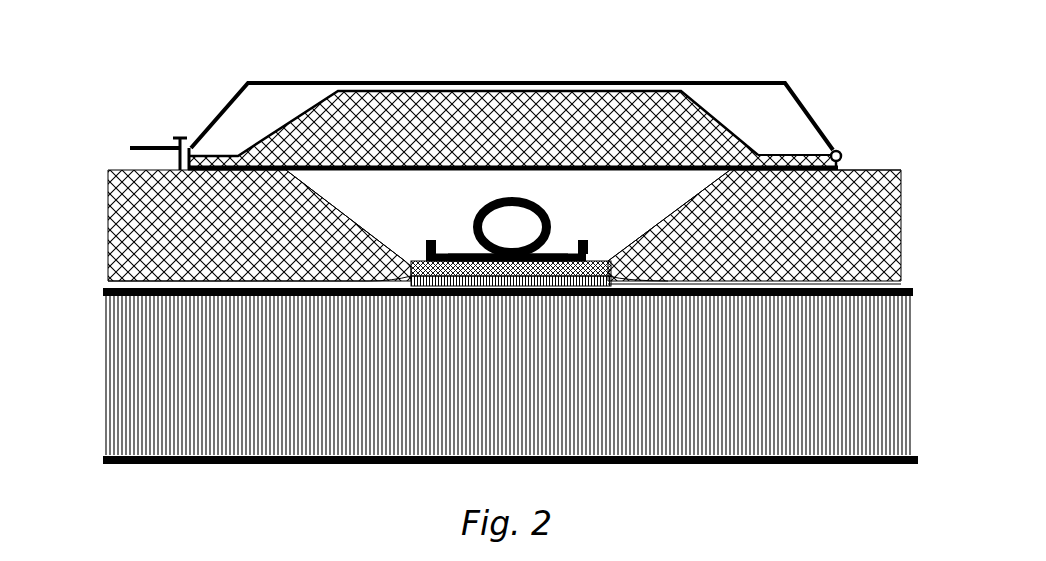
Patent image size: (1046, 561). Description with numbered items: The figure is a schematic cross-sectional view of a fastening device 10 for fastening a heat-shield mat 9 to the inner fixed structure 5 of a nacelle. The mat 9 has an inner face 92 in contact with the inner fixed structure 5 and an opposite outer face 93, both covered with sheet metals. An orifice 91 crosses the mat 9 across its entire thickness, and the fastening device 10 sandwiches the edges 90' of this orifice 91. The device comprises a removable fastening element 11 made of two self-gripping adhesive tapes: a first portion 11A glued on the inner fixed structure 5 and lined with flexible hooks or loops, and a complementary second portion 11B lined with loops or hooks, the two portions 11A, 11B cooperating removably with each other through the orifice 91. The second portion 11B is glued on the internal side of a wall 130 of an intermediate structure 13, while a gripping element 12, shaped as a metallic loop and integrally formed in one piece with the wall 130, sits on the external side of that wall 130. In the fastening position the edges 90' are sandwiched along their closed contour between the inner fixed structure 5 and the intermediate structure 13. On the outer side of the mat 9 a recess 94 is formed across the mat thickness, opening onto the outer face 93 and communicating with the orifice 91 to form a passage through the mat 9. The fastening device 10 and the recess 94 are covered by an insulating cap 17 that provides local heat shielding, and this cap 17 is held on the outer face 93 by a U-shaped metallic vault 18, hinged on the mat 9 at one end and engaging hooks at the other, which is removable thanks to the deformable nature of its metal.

The inner fixed structure 5 is at (723, 462).
The heat-shield mat 9 is at (117, 218).
The fastening device 10 is at (555, 192).
The fastening element 11 is at (360, 284).
The first portion 11A is at (415, 278).
The second portion 11B is at (447, 247).
The gripping element 12 is at (503, 190).
The intermediate structure 13 is at (580, 243).
The insulating cap 17 is at (295, 100).
The metallic vault 18 is at (206, 110).
The edges of the orifice 90' is at (456, 159).
The orifice 91 is at (556, 284).
The inner face 92 is at (866, 276).
The outer face 93 is at (870, 160).
The recess 94 is at (707, 142).
The wall 130 is at (560, 250).